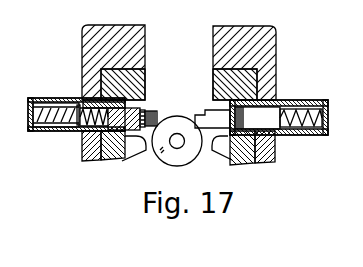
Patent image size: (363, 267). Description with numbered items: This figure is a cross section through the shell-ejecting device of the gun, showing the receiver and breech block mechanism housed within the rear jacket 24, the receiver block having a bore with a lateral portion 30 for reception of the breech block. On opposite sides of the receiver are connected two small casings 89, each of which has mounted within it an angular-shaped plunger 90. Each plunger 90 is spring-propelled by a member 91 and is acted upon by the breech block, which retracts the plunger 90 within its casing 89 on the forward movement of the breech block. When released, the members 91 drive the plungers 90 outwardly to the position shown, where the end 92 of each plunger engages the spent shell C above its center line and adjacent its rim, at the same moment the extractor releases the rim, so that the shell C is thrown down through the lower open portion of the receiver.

The rear jacket 24 is at (274, 63).
The lateral portion of the bore 30 is at (134, 154).
The casing 89 is at (304, 136).
The angular-shaped plunger 90 is at (266, 114).
The spring member 91 is at (309, 112).
The plunger end 92 is at (205, 114).
The cartridge C is at (196, 158).